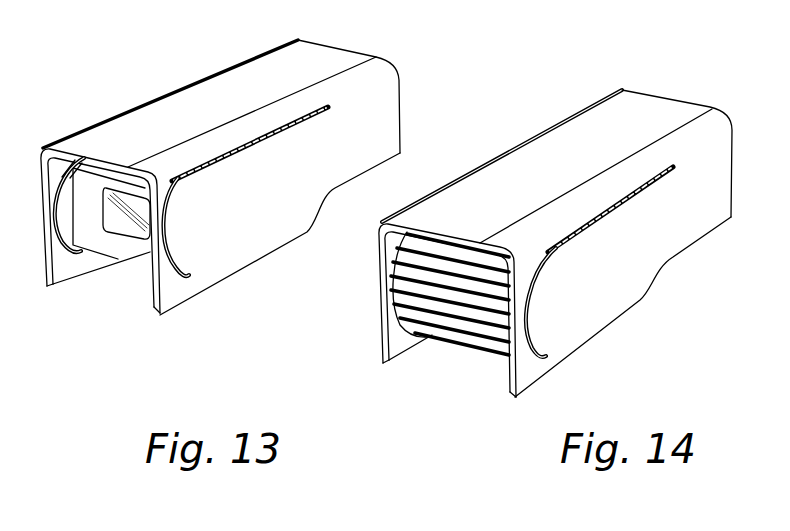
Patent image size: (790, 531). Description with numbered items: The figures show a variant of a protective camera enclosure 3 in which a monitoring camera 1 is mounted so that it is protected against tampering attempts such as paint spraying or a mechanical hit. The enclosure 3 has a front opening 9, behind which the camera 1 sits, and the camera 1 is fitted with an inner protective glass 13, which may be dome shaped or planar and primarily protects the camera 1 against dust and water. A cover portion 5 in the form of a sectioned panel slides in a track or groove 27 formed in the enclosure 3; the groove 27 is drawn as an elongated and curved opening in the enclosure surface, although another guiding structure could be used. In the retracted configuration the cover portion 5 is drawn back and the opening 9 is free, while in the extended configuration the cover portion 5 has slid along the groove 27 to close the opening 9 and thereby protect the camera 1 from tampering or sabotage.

In FIG. 13, the monitoring camera 1 is at (152, 130).
In FIG. 13, the protective camera enclosure 3 is at (245, 75).
In FIG. 14, the cover portion 5 is at (452, 295).
In FIG. 13, the opening 9 is at (139, 303).
In FIG. 13, the inner protective glass 13 is at (120, 225).
In FIG. 13, the groove 27 is at (252, 153).
In FIG. 14, the groove 27 is at (618, 205).